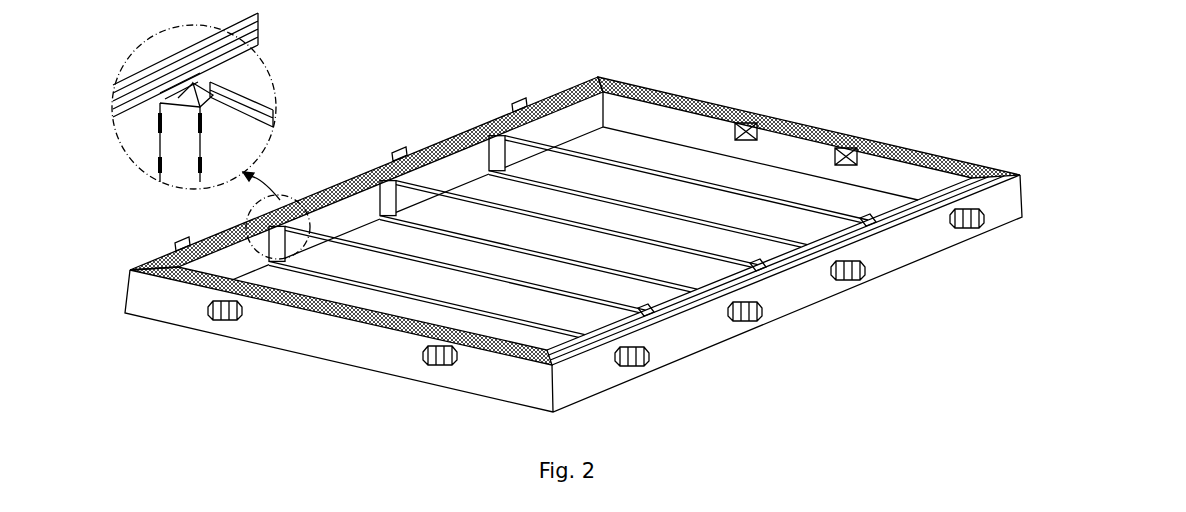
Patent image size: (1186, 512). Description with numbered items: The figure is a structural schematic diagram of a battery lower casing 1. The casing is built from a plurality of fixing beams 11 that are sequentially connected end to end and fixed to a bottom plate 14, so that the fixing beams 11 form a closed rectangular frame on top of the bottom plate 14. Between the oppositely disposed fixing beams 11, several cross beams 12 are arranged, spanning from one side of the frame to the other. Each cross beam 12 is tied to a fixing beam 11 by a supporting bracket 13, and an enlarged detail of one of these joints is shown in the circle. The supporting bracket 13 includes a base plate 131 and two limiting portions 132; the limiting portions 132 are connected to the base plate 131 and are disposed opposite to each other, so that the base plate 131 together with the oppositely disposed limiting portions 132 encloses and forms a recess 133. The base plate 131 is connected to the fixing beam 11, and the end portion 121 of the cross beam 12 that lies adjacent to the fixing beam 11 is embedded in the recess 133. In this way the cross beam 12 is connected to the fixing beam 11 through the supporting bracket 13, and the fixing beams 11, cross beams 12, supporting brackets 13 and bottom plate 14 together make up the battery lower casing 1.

The battery lower casing 1 is at (597, 47).
The fixing beam 11 is at (430, 133).
The cross beam 12 is at (607, 173).
The supporting bracket 13 is at (492, 138).
The bottom plate 14 is at (772, 173).
The end portion 121 is at (268, 108).
The base plate 131 is at (185, 95).
The limiting portion 132 is at (213, 95).
The recess 133 is at (205, 100).